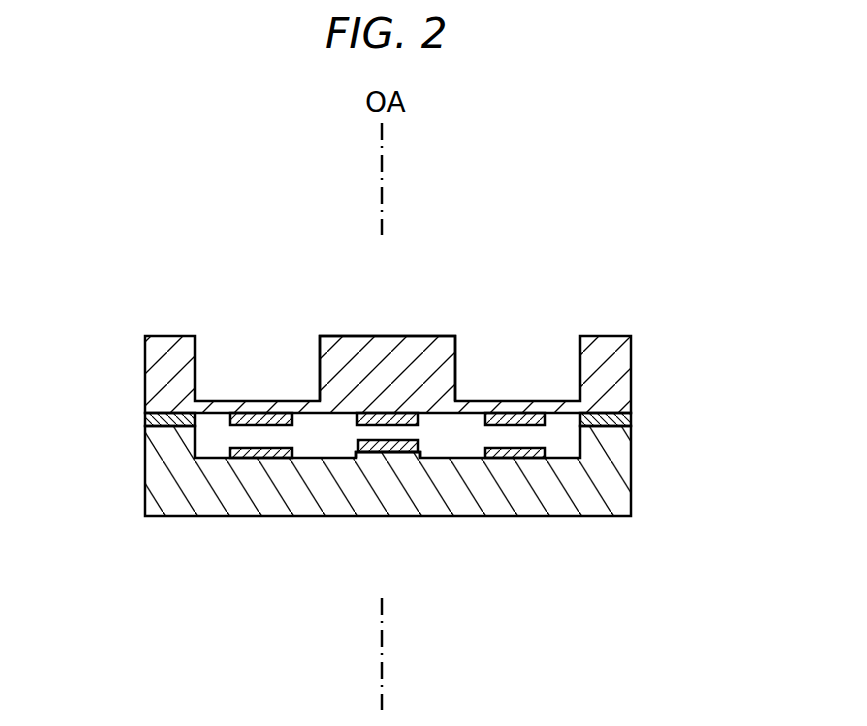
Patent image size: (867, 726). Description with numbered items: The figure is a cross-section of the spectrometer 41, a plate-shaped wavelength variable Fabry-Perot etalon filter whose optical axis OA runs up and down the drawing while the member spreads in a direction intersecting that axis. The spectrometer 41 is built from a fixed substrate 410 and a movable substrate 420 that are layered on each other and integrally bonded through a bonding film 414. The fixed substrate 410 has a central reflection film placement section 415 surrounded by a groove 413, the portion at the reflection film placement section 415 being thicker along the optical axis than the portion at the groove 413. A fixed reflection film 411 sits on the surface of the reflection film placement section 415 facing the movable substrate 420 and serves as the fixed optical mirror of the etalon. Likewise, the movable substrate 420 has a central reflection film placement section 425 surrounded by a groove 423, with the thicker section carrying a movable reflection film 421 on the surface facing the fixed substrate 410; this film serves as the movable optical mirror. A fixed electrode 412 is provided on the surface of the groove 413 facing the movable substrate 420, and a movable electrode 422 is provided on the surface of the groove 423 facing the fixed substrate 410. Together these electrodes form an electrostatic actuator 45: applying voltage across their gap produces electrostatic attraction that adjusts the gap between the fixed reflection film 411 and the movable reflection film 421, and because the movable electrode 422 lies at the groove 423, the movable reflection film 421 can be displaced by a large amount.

The spectrometer 41 is at (640, 243).
The fixed substrate 410 is at (160, 480).
The fixed reflection film 411 is at (400, 445).
The fixed electrode 412 is at (515, 453).
The groove 413 is at (325, 458).
The bonding film 414 is at (625, 415).
The reflection film placement section 415 is at (387, 455).
The movable substrate 420 is at (160, 377).
The movable reflection film 421 is at (398, 420).
The movable electrode 422 is at (512, 418).
The groove 423 is at (262, 408).
The reflection film placement section 425 is at (360, 362).
The electrostatic actuator 45 is at (540, 436).